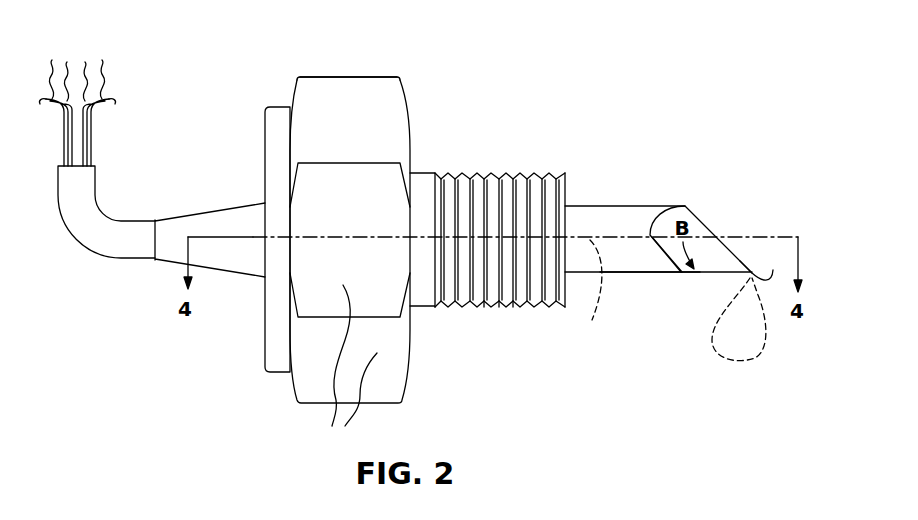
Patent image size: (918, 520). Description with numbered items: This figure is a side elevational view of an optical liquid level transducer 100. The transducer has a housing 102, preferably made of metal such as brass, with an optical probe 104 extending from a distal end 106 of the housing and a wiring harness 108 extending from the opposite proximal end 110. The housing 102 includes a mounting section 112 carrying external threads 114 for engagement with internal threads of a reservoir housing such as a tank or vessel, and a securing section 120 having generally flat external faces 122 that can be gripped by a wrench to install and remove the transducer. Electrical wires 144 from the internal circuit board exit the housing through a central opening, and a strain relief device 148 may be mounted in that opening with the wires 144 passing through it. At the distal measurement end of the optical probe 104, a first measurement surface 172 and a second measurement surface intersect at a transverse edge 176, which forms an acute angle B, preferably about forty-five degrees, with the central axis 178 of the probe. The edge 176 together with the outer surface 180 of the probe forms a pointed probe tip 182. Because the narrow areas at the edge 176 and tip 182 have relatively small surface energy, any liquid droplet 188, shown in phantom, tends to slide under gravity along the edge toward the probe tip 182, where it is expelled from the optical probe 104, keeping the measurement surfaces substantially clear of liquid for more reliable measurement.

The optical liquid level transducer 100 is at (560, 73).
The housing 102 is at (378, 63).
The optical probe 104 is at (643, 193).
The distal end 106 is at (565, 188).
The wiring harness 108 is at (63, 221).
The proximal end 110 is at (265, 322).
The mounting section 112 is at (483, 173).
The external threads 114 is at (480, 307).
The securing section 120 is at (333, 75).
The external faces 122 is at (343, 367).
The electrical wires 144 is at (77, 103).
The strain relief device 148 is at (187, 226).
The first measurement surface 172 is at (705, 262).
The transverse edge 176 is at (699, 204).
The central axis 178 is at (602, 293).
The outer surface 180 is at (633, 272).
The probe tip 182 is at (764, 260).
The liquid droplet 188 is at (730, 349).